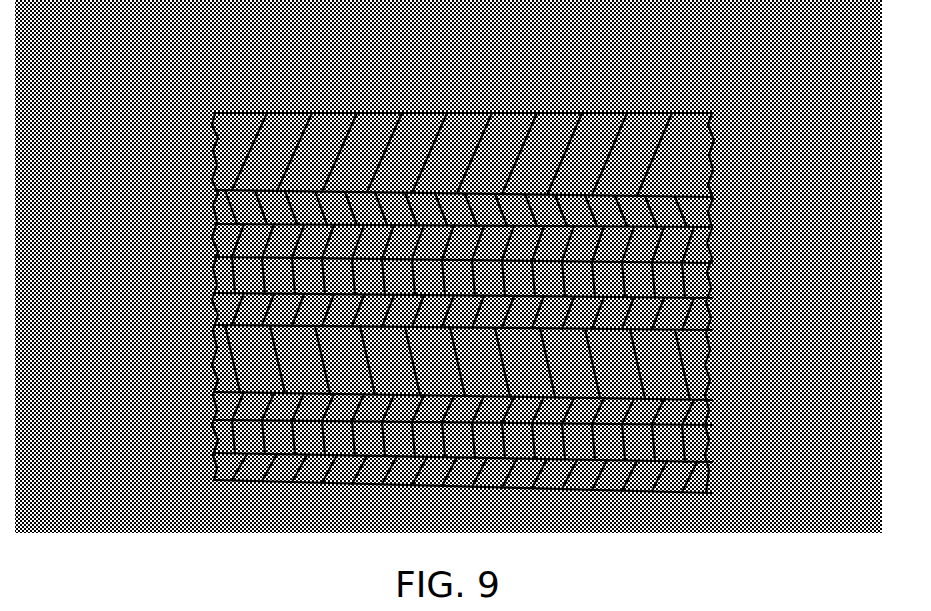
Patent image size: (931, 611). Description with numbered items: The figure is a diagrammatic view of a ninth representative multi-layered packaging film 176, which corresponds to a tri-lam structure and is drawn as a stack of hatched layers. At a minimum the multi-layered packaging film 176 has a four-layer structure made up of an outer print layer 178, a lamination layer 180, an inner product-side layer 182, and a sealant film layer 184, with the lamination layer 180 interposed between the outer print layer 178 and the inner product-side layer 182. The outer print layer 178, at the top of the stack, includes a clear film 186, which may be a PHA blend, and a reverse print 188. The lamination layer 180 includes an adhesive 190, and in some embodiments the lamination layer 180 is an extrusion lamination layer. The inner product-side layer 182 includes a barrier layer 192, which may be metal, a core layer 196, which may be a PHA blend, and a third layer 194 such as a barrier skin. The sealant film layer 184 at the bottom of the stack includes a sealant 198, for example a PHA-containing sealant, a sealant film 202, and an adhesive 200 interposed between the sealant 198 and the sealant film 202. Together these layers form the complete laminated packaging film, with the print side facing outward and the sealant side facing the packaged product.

The multi-layered packaging film 176 is at (178, 72).
The outer print layer 178 is at (180, 115).
The lamination layer 180 is at (738, 228).
The inner product-side layer 182 is at (180, 400).
The sealant film layer 184 is at (180, 405).
The clear film 186 is at (712, 150).
The reverse print 188 is at (708, 212).
The adhesive 190 is at (216, 242).
The barrier layer 192 is at (708, 290).
The third layer 194 is at (708, 318).
The core layer 196 is at (710, 372).
The sealant 198 is at (706, 410).
The adhesive 200 is at (708, 447).
The sealant film 202 is at (708, 482).